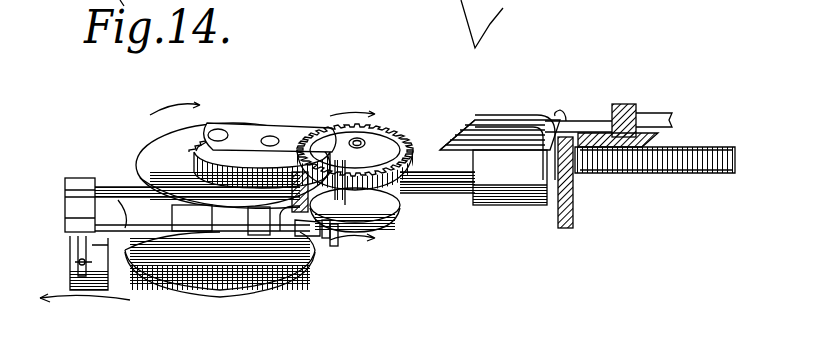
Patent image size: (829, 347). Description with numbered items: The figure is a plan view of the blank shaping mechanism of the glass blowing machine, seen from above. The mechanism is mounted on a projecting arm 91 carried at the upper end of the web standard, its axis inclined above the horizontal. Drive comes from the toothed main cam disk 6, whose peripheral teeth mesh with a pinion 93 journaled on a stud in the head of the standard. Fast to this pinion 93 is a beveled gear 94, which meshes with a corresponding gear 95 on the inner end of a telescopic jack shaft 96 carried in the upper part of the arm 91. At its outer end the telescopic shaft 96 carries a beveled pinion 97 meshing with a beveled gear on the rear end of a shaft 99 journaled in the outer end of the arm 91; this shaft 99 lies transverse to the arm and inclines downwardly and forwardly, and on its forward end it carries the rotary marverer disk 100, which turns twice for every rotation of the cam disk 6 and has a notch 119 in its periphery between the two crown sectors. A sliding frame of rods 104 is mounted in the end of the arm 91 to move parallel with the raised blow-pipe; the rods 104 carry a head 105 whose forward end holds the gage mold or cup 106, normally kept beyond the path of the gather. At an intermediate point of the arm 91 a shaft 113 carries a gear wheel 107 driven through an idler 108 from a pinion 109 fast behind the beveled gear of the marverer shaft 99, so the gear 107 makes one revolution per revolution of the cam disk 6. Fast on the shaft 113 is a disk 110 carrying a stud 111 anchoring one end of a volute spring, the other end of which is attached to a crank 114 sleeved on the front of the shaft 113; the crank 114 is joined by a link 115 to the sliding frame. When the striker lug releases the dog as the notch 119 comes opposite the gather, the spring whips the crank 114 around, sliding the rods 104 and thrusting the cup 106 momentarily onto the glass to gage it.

The main cam disk 6 is at (708, 162).
The projecting arm 91 is at (512, 118).
The pinion 93 is at (620, 162).
The beveled gear 94 is at (626, 106).
The gear 95 is at (572, 192).
The telescopic jack shaft 96 is at (452, 184).
The beveled pinion 97 is at (296, 200).
The shaft 99 is at (220, 135).
The rotary marverer disk 100 is at (246, 266).
The rods 104 is at (100, 190).
The head 105 is at (82, 207).
The gage mold or cup 106 is at (100, 272).
The gear wheel 107 is at (378, 140).
The idler 108 is at (276, 160).
The pinion 109 is at (197, 151).
The disk 110 is at (388, 208).
The stud 111 is at (328, 238).
The shaft 113 is at (362, 142).
The crank 114 is at (340, 240).
The link 115 is at (322, 238).
The notch 119 is at (152, 240).